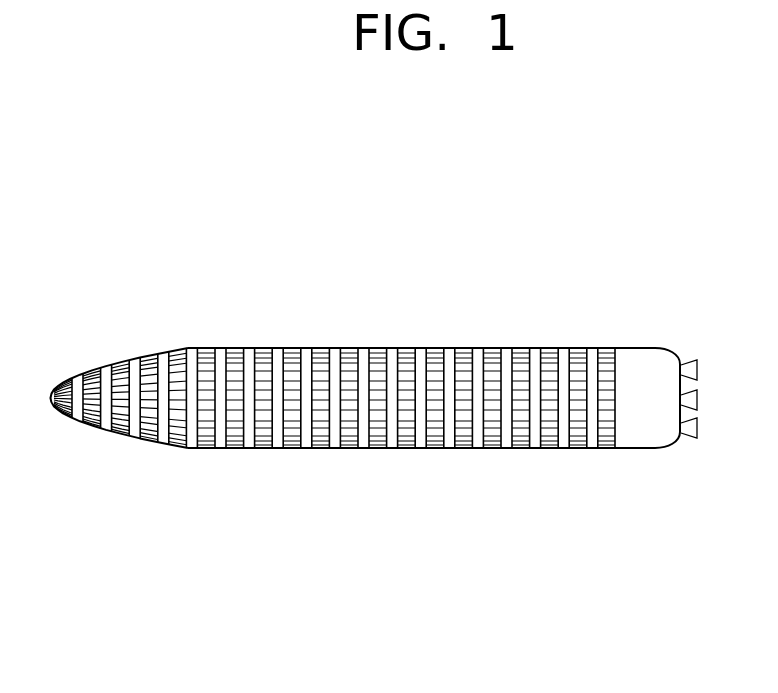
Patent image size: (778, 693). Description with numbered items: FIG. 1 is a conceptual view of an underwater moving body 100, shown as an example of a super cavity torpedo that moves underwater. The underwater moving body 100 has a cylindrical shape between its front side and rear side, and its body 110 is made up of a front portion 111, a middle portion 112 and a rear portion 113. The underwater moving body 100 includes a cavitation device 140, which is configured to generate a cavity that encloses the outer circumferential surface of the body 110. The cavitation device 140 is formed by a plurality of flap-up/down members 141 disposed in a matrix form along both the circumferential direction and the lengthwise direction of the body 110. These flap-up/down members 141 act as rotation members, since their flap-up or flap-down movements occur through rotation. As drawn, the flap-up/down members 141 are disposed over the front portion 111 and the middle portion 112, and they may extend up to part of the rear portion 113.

The underwater moving body 100 is at (374, 404).
The body 110 is at (374, 486).
The front portion 111 is at (133, 438).
The middle portion 112 is at (392, 442).
The rear portion 113 is at (577, 464).
The cavitation device 140 is at (350, 347).
The flap-up/down members 141 is at (321, 370).